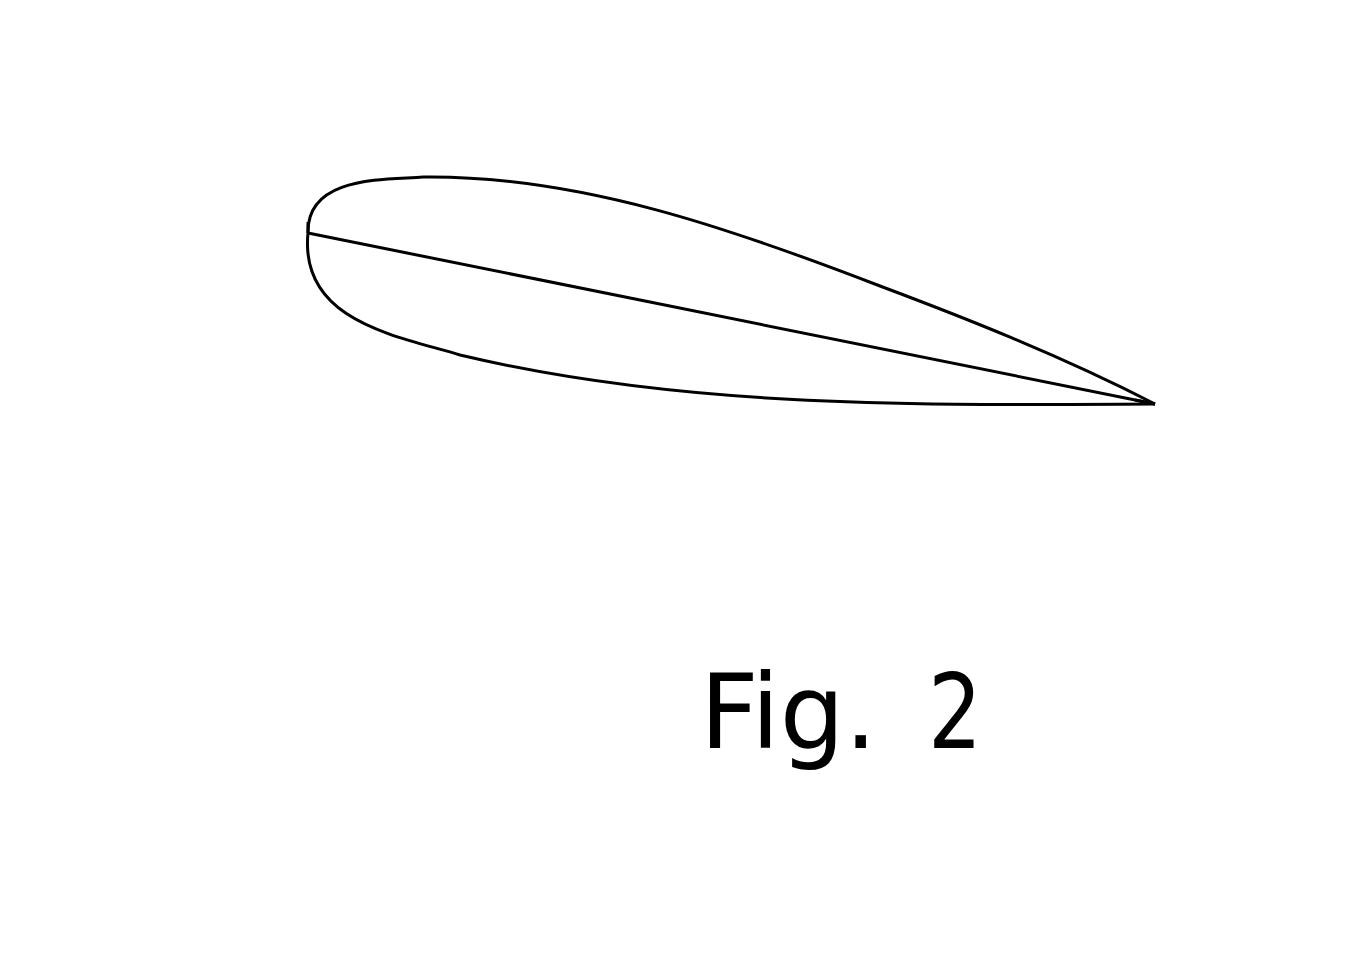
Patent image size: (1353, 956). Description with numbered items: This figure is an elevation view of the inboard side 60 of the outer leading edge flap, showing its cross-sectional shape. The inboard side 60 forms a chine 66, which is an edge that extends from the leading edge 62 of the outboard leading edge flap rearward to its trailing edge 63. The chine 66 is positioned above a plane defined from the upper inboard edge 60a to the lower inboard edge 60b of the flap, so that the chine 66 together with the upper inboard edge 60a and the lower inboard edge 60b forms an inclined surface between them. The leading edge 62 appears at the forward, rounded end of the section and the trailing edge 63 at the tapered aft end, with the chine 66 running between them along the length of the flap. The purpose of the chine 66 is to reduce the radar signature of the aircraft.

The inboard side 60 is at (715, 325).
The upper inboard edge 60a is at (385, 174).
The lower inboard edge 60b is at (459, 359).
The leading edge 62 is at (295, 236).
The trailing edge 63 is at (1192, 396).
The chine 66 is at (561, 276).